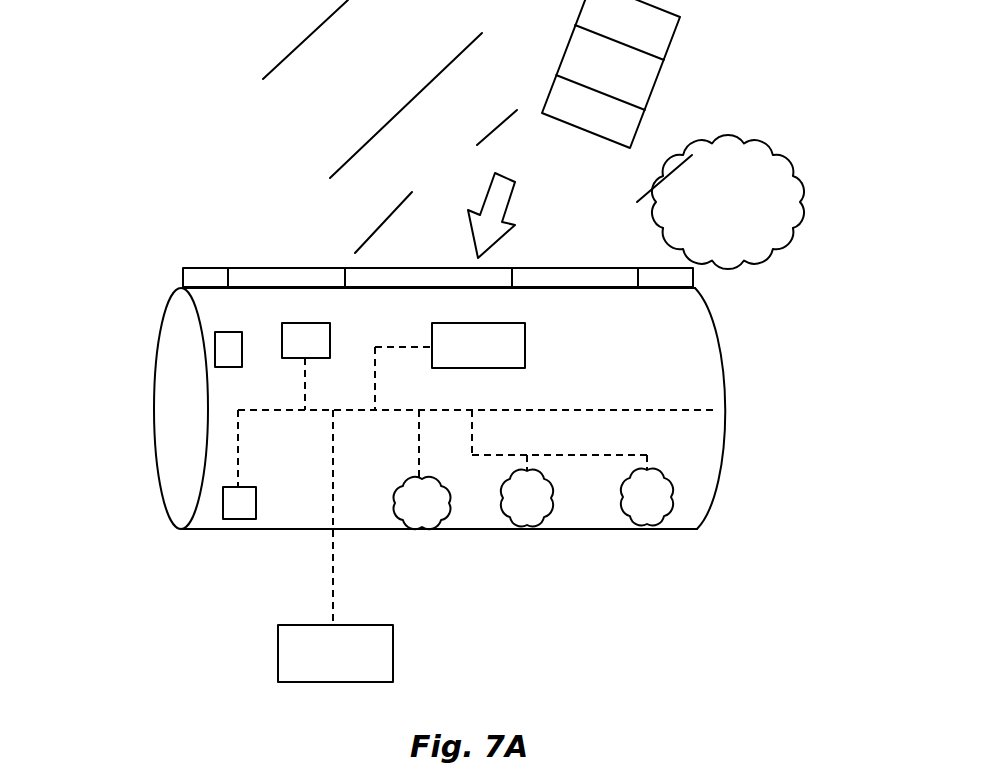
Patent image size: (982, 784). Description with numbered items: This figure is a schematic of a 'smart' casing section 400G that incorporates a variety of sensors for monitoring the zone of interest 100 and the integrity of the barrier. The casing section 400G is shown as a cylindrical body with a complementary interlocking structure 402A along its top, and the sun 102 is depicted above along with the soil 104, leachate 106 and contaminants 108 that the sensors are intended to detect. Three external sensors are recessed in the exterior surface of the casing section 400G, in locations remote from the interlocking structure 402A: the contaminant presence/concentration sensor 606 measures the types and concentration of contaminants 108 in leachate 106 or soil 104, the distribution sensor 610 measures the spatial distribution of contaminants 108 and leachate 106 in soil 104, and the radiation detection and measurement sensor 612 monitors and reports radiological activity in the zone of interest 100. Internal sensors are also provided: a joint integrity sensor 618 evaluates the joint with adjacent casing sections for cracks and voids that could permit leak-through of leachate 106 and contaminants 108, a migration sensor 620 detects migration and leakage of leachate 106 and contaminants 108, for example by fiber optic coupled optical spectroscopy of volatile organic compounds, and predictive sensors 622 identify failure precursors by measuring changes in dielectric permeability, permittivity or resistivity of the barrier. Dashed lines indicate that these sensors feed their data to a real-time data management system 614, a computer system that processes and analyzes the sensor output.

The zone of interest 100 is at (257, 177).
The solar panel 102 is at (657, 93).
The soil 104 is at (384, 87).
The leachate 106 is at (512, 215).
The contaminants 108 is at (750, 220).
The smart casing section 400G is at (720, 338).
The complementary interlocking structure 402A is at (183, 273).
The contaminant presence/concentration sensor 606 is at (525, 529).
The distribution sensor 610 is at (638, 529).
The radiation detection and measurement (RDM) sensor 612 is at (423, 529).
The real-time data management system 614 is at (278, 648).
The joint integrity sensor 618 is at (225, 347).
The migration sensor 620 is at (508, 347).
The predictive sensor 622 is at (307, 338).